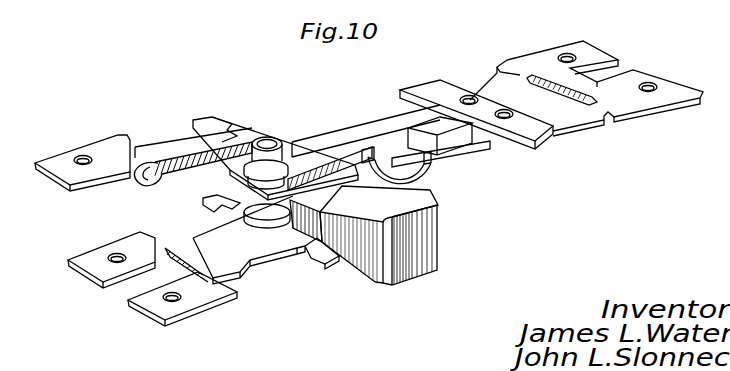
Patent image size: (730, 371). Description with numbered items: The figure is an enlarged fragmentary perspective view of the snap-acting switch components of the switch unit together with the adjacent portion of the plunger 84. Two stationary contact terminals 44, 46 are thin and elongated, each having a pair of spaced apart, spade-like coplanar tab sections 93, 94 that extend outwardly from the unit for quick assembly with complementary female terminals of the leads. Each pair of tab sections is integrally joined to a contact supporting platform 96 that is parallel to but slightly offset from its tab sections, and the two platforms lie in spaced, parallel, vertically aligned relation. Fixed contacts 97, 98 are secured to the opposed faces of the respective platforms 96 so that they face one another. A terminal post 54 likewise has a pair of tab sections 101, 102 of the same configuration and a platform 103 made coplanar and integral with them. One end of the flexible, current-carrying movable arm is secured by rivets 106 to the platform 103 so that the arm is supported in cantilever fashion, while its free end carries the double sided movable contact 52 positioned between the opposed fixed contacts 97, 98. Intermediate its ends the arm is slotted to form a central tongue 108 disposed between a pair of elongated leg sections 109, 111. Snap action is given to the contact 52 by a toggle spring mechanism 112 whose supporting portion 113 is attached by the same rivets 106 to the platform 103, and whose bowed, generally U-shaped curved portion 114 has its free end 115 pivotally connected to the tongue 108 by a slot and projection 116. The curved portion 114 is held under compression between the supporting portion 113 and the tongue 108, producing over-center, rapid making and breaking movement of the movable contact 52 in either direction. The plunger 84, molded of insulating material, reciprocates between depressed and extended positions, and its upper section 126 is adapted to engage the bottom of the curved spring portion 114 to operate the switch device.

The tab section 93 is at (93, 147).
The stationary contact terminal 44 is at (172, 147).
The contact supporting platform 96 is at (256, 135).
The fixed contact 97 is at (285, 143).
The leg section 109 is at (313, 143).
The central tongue 108 is at (322, 160).
The free end 115 is at (364, 158).
The supporting portion 113 is at (447, 127).
The platform 103 is at (503, 97).
The tab section 101 is at (590, 60).
The tab section 102 is at (667, 88).
The rivets 106 is at (511, 111).
The slot and projection 116 is at (426, 136).
The terminal post 54 is at (568, 114).
The toggle spring mechanism 112 is at (433, 172).
The leg section 111 is at (467, 145).
The movable contact 52 is at (258, 183).
The curved portion 114 is at (403, 187).
The plunger 84 is at (430, 255).
The tab section 94 is at (207, 300).
The stationary contact terminal 46 is at (240, 279).
The fixed contact 98 is at (277, 228).
The upper section 126 is at (367, 197).